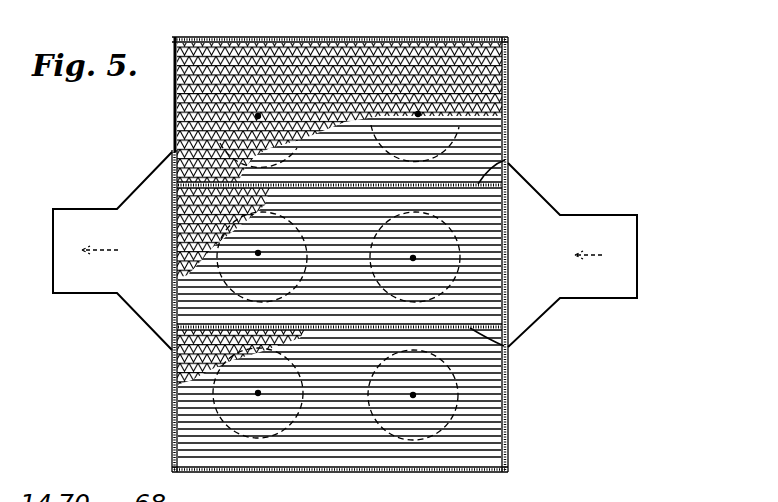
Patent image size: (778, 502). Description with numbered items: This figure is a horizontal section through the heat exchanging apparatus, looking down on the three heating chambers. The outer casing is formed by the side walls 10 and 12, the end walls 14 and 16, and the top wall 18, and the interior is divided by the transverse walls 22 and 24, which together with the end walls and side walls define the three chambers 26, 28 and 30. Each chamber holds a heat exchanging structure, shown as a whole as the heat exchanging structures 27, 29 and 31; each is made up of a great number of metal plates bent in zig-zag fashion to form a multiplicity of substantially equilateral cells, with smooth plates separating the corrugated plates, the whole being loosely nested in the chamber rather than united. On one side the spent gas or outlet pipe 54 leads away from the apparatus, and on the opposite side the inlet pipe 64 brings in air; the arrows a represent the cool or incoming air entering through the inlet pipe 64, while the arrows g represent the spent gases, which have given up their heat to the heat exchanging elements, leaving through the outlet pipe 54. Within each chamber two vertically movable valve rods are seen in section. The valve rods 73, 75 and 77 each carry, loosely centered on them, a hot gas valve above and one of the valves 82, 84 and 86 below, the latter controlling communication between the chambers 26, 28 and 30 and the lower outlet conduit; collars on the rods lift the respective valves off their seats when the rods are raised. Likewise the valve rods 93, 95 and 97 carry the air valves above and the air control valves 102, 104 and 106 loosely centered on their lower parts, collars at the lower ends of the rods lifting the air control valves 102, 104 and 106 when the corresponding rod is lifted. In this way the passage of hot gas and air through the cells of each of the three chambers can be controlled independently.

The side wall 10 is at (172, 427).
The side wall 12 is at (509, 58).
The end wall 14 is at (372, 37).
The end wall 16 is at (376, 471).
The top wall 18 is at (195, 76).
The transverse wall 22 is at (512, 167).
The transverse wall 24 is at (504, 344).
The chamber 26 is at (492, 125).
The heat exchanging structure 27 is at (193, 127).
The chamber 28 is at (484, 267).
The heat exchanging structure 29 is at (200, 210).
The chamber 30 is at (488, 405).
The heat exchanging structure 31 is at (176, 386).
The spent gas or outlet pipe 54 is at (78, 209).
The inlet pipe 64 is at (616, 209).
The valve rod 73 is at (258, 106).
The valve rod 75 is at (257, 251).
The valve rod 77 is at (259, 391).
The valve 82 is at (283, 151).
The valve 84 is at (305, 272).
The valve 86 is at (288, 422).
The valve rod 93 is at (418, 101).
The valve rod 95 is at (420, 248).
The valve rod 97 is at (418, 384).
The air control valve 102 is at (441, 153).
The air control valve 104 is at (440, 293).
The air control valve 106 is at (442, 428).
The arrows representing cool or incoming air a is at (594, 253).
The arrows representing spent gases g is at (100, 262).